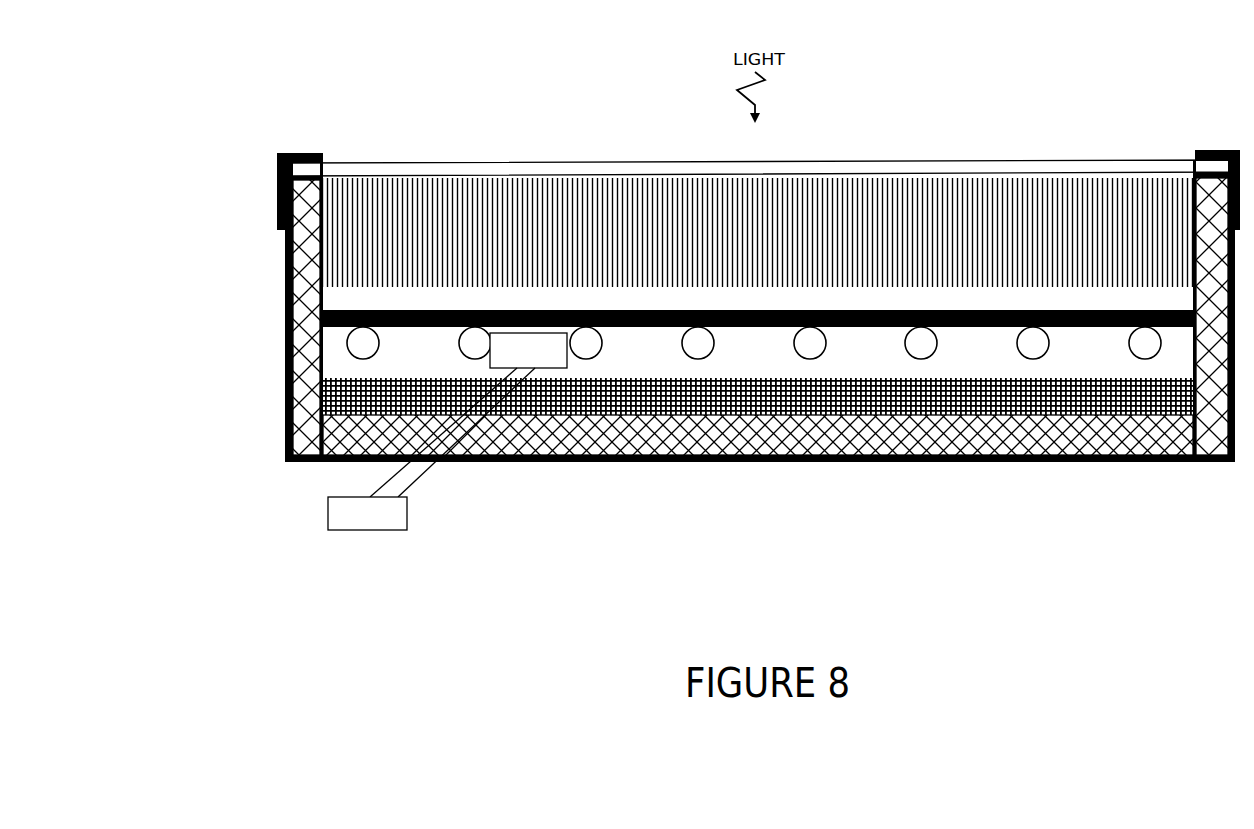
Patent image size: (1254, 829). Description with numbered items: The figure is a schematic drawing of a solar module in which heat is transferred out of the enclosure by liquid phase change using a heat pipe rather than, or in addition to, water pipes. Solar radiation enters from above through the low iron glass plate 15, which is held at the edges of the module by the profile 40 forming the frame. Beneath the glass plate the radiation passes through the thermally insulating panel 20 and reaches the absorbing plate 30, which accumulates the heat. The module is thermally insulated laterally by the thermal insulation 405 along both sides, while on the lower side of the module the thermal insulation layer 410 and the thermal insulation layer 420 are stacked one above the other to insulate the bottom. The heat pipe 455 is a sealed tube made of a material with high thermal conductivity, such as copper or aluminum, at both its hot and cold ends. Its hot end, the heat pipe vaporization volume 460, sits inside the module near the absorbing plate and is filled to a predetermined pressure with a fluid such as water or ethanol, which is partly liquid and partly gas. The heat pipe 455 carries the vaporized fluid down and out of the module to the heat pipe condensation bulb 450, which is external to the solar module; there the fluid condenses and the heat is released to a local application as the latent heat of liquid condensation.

The low iron glass plate 15 is at (400, 156).
The profile 40 is at (280, 180).
The thermally insulating panel 20 is at (350, 262).
The thermal insulation 405 is at (322, 292).
The absorbing plate 30 is at (358, 316).
The thermal insulation layer 410 is at (320, 388).
The thermal insulation layer 420 is at (352, 447).
The heat pipe condensation bulb 450 is at (407, 513).
The heat pipe vaporization volume 460 is at (541, 352).
The heat pipe 455 is at (543, 528).